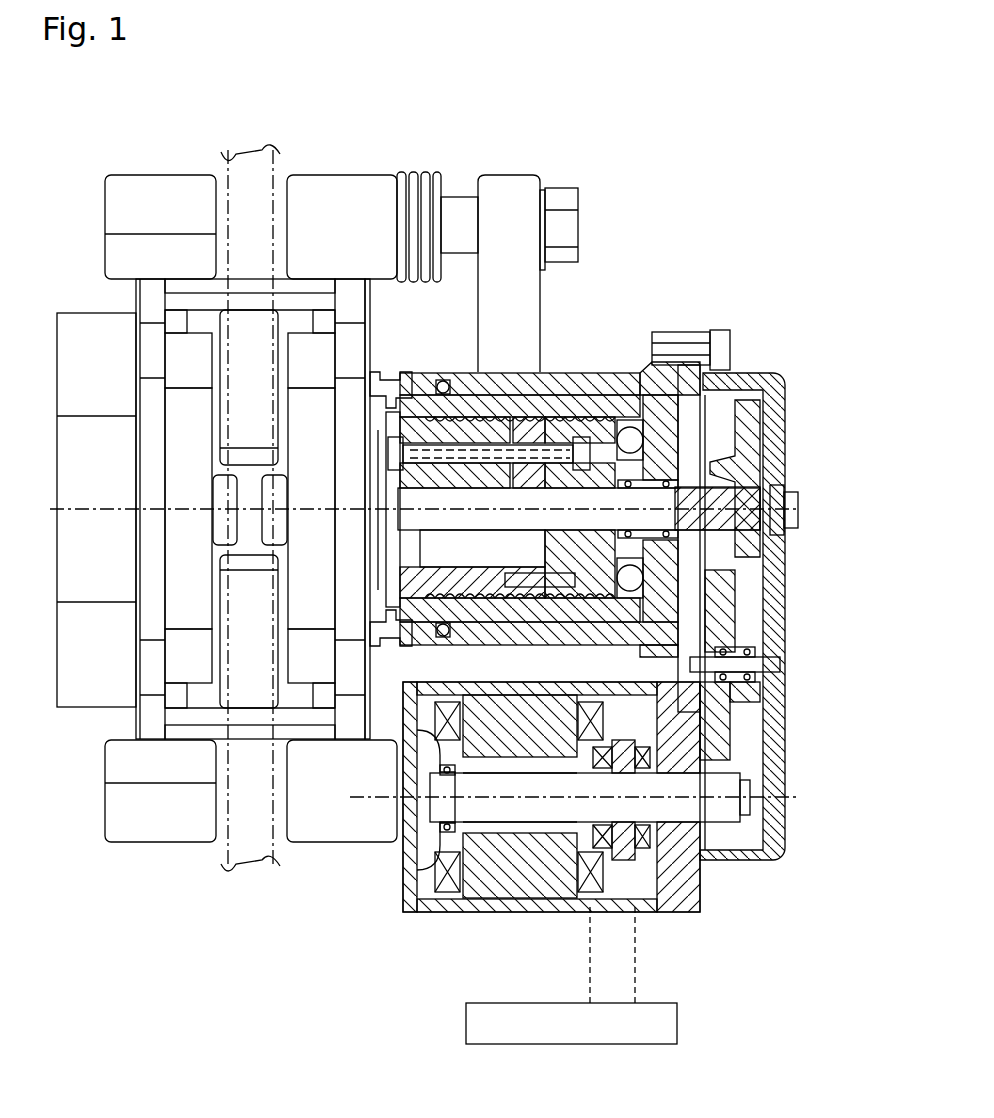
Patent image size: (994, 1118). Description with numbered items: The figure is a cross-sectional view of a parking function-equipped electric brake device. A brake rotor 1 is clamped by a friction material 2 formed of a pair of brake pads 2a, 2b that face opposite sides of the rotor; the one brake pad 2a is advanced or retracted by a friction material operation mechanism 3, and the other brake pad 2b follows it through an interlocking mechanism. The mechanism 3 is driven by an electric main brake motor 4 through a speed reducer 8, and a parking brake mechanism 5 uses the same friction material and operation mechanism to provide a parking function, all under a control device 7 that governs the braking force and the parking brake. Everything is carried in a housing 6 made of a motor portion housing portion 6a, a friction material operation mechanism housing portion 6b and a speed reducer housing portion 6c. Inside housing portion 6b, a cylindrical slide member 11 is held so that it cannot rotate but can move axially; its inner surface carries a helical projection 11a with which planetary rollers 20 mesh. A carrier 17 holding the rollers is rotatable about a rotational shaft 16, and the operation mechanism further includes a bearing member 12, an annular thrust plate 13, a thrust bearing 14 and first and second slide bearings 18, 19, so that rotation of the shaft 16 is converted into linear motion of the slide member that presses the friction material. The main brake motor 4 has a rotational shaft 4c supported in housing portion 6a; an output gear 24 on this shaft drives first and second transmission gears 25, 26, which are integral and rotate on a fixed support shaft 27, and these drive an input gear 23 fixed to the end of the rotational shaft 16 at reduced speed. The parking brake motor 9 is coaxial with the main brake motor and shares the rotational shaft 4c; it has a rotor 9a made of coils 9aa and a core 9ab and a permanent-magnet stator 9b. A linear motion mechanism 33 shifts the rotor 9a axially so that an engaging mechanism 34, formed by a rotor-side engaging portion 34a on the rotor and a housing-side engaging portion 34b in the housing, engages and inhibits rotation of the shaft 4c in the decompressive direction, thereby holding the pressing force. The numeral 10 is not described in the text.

The brake rotor 1 is at (236, 165).
The friction material 2 is at (213, 621).
The brake pad 2a is at (305, 605).
The brake pad 2b is at (183, 585).
The friction material operation mechanism 3 is at (587, 385).
The electric main brake motor 4 is at (585, 855).
The rotational shaft 4c is at (423, 815).
The parking brake mechanism 5 is at (657, 895).
The housing 6 is at (417, 917).
The motor portion housing portion 6a is at (445, 906).
The friction material operation mechanism housing portion 6b is at (603, 382).
The speed reducer housing portion 6c is at (765, 380).
The control device 7 is at (675, 1035).
The speed reducer 8 is at (764, 430).
The parking brake motor 9 is at (583, 865).
The rotor 9a is at (519, 848).
The coils 9aa is at (560, 865).
The core 9ab is at (600, 858).
The stator 9b is at (648, 893).
The wheel 10 is at (322, 832).
The slide member 11 is at (498, 425).
The helical projection 11a is at (468, 440).
The bearing member 12 is at (657, 410).
The annular thrust plate 13 is at (542, 440).
The thrust bearing 14 is at (632, 430).
The rotational shaft 16 is at (412, 521).
The carrier 17 is at (430, 548).
The first slide bearing 18 is at (536, 412).
The second slide bearing 19 is at (402, 482).
The planetary rollers 20 is at (466, 416).
The input gear 23 is at (752, 456).
The output gear 24 is at (735, 818).
The first transmission gear 25 is at (727, 733).
The second transmission gear 26 is at (757, 627).
The fixed support shaft 27 is at (770, 660).
The linear motion mechanism 33 is at (663, 790).
The engaging mechanism 34 is at (690, 868).
The rotor-side engaging portion 34a is at (700, 895).
The housing-side engaging portion 34b is at (765, 681).